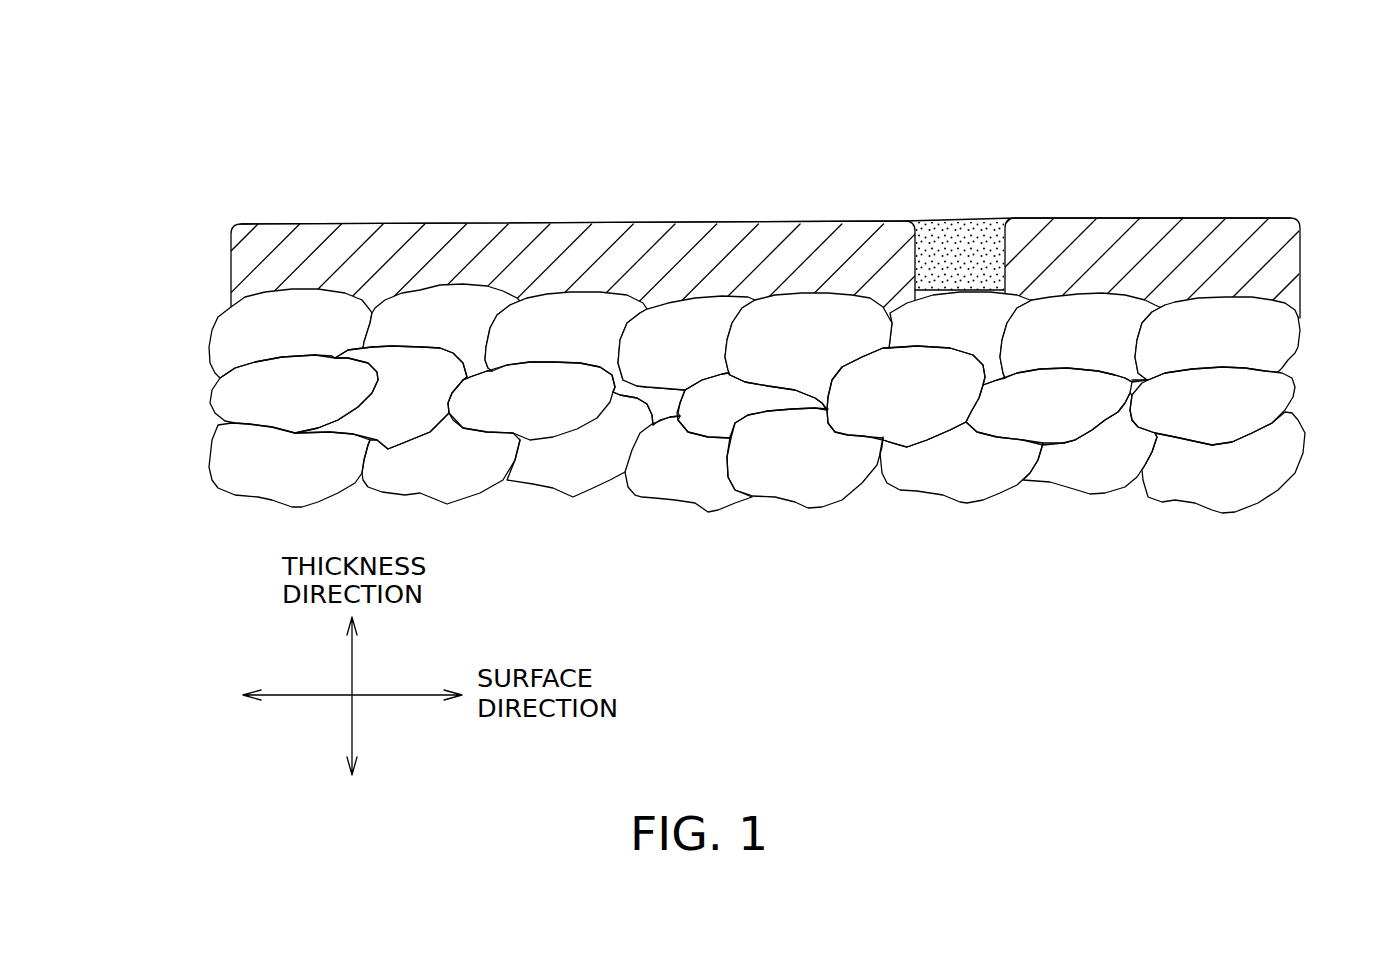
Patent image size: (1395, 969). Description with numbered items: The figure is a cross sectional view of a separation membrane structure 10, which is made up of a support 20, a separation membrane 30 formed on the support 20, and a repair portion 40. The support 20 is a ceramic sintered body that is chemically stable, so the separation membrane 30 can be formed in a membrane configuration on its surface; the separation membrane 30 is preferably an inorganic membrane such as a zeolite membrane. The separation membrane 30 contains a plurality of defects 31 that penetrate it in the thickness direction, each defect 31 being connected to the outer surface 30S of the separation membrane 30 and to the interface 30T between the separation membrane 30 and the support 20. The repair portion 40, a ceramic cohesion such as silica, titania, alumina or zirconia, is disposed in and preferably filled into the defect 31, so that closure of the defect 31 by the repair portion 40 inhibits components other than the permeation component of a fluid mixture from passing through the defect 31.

The separation membrane structure 10 is at (400, 140).
The support 20 is at (1330, 328).
The separation membrane 30 is at (1330, 217).
The outer surface 30S is at (297, 218).
The interface 30T is at (290, 292).
The defect 31 is at (1017, 197).
The repair portion 40 is at (945, 225).